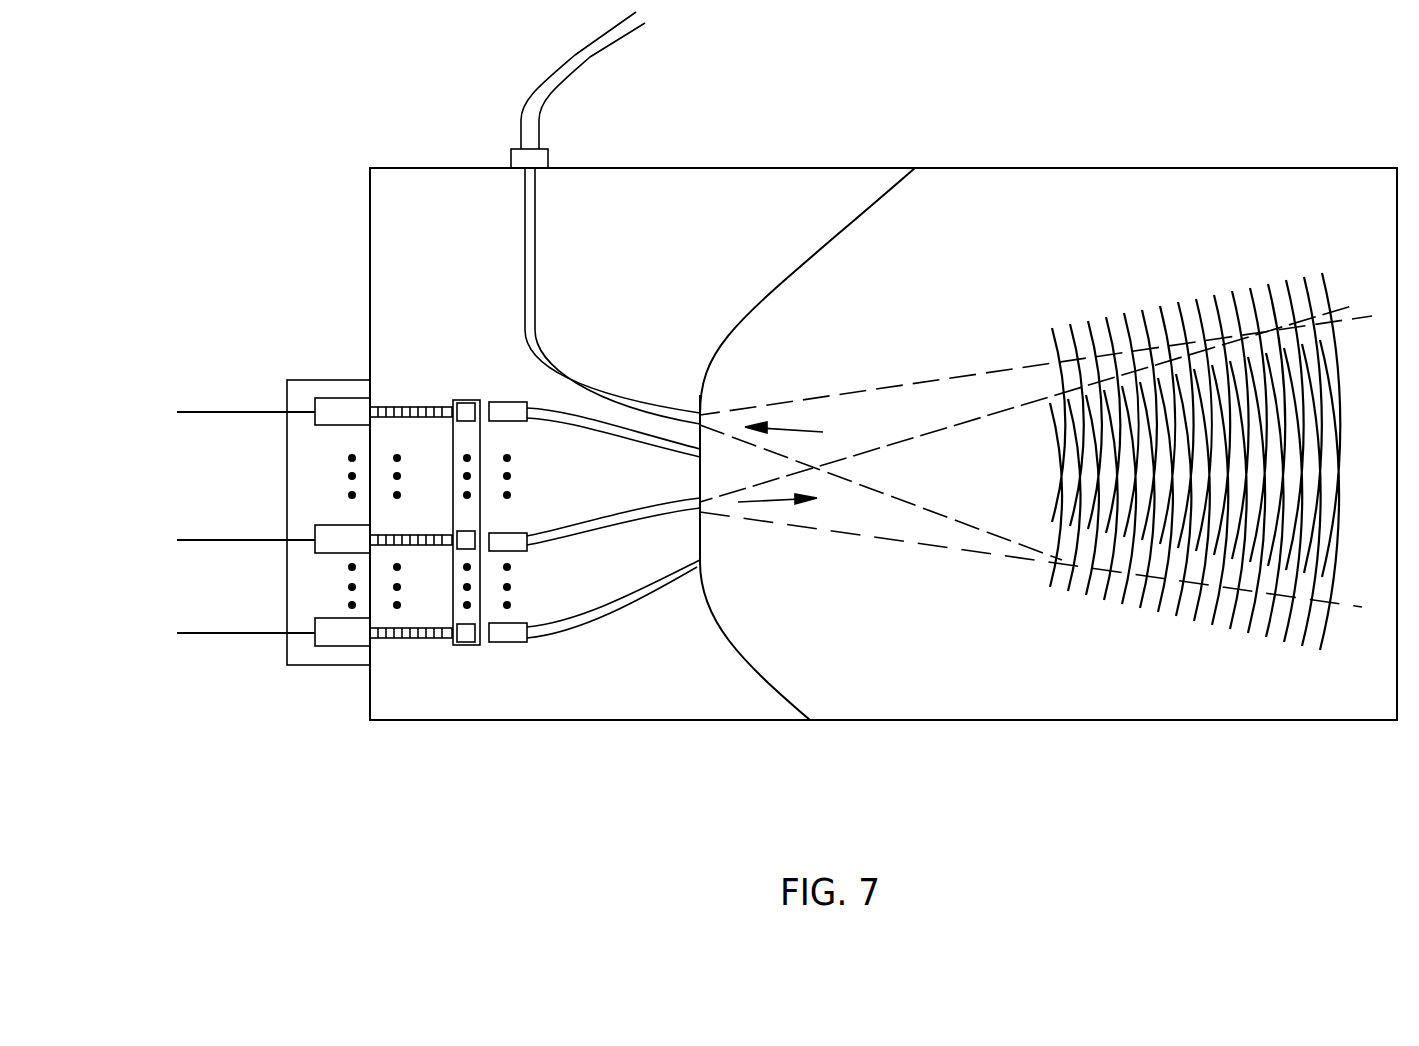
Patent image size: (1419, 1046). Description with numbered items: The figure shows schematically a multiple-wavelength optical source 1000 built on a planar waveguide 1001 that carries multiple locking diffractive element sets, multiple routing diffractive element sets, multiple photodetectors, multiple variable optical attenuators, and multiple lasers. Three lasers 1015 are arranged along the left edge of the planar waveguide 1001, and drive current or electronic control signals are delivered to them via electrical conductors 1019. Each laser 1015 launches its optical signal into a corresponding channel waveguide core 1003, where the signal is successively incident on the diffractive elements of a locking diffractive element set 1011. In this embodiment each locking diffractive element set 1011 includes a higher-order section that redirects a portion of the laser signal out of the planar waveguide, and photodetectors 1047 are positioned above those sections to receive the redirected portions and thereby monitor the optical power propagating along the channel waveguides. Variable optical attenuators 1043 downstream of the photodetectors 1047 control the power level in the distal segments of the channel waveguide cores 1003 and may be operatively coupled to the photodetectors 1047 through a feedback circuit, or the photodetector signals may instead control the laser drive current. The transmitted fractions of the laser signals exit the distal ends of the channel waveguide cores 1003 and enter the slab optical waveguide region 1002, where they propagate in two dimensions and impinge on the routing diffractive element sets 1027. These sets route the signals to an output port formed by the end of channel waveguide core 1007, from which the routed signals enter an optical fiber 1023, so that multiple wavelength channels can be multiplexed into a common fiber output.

The multiple-wavelength optical source 1000 is at (305, 812).
The planar waveguide 1001 is at (717, 703).
The slab optical waveguide region 1002 is at (958, 651).
The channel waveguide cores 1003 is at (610, 432).
The channel waveguide core 1007 is at (533, 197).
The locking diffractive element sets 1011 is at (413, 407).
The lasers 1015 is at (337, 542).
The electrical conductors 1019 is at (238, 413).
The optical fiber 1023 is at (575, 70).
The routing diffractive element sets 1027 is at (1149, 245).
The variable optical attenuators 1043 is at (502, 402).
The photodetectors 1047 is at (466, 402).